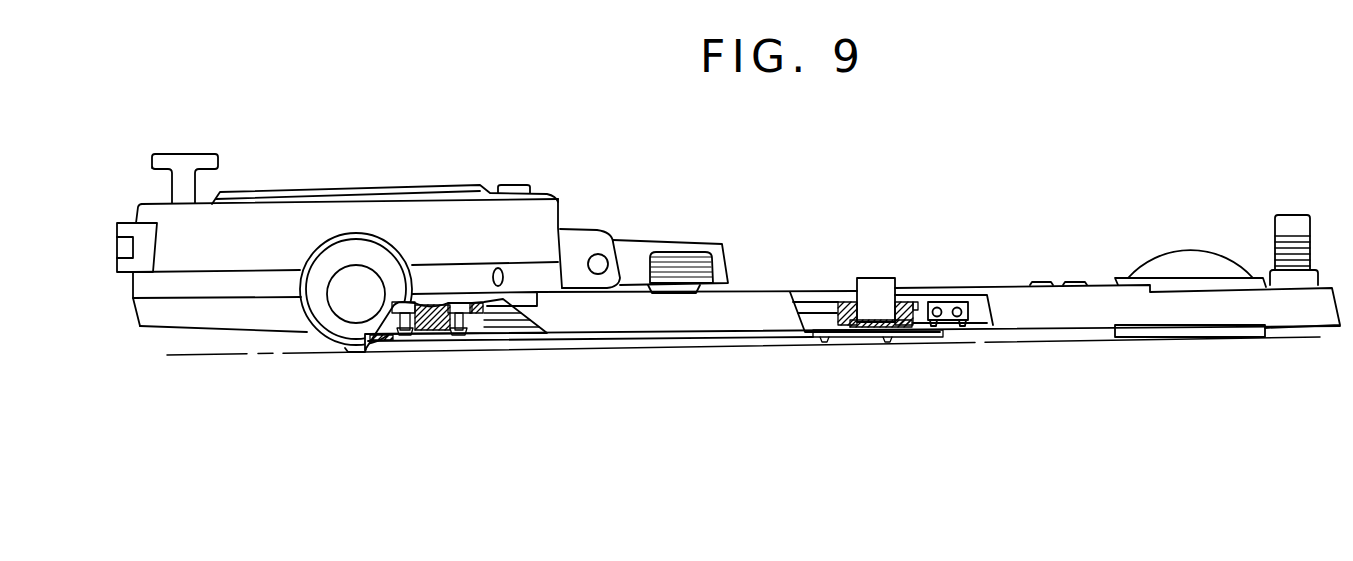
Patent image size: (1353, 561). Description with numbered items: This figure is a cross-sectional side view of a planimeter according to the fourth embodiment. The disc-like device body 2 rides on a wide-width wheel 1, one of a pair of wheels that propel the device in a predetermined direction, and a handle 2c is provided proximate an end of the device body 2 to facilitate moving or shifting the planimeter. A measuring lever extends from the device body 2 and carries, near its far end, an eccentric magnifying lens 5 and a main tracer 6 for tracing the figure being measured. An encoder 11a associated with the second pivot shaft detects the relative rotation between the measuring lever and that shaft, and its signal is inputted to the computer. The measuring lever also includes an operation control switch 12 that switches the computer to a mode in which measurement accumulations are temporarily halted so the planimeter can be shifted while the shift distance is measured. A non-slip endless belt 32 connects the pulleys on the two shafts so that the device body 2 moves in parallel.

The wheel 1 is at (352, 338).
The device body 2 is at (538, 218).
The handle 2c is at (203, 163).
The eccentric magnifying lens 5 is at (1180, 258).
The main tracer 6 is at (1153, 337).
The encoder 11a is at (883, 277).
The operation control switch 12 is at (940, 330).
The non-slip endless belt 32 is at (823, 313).